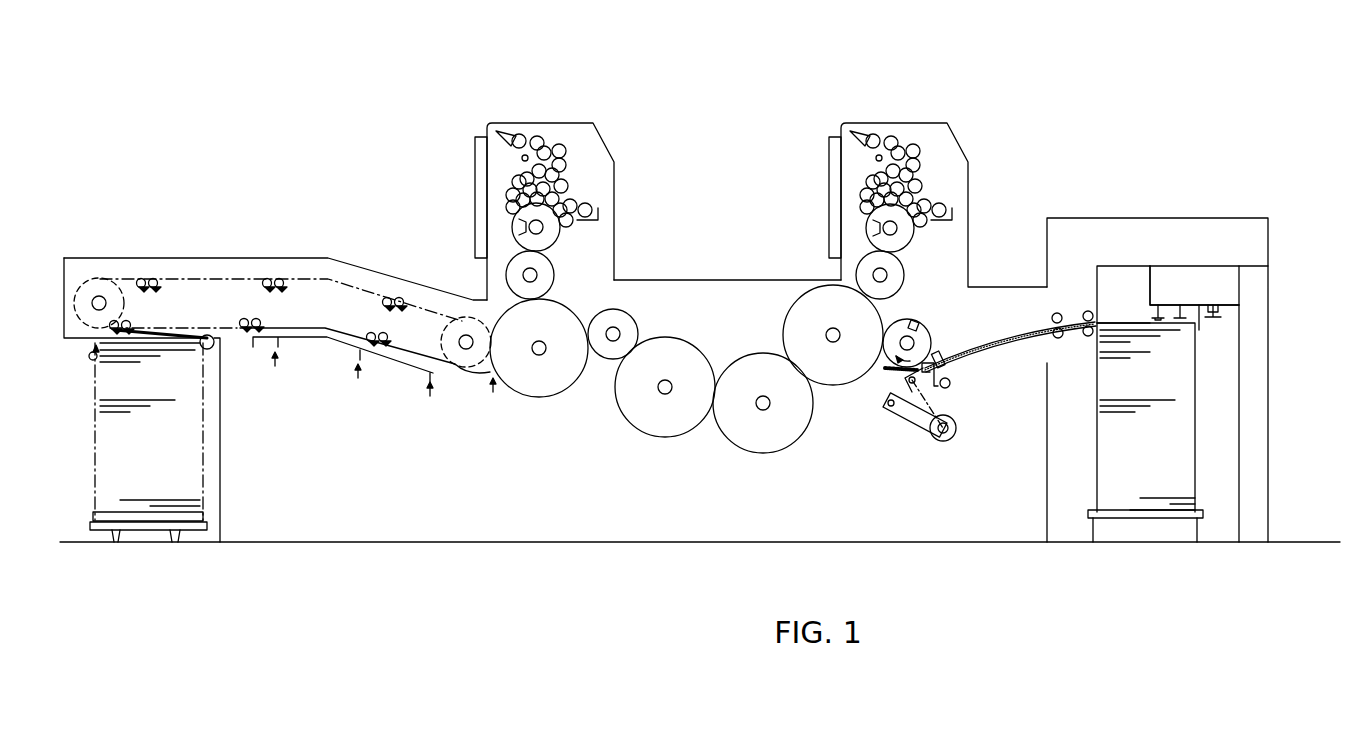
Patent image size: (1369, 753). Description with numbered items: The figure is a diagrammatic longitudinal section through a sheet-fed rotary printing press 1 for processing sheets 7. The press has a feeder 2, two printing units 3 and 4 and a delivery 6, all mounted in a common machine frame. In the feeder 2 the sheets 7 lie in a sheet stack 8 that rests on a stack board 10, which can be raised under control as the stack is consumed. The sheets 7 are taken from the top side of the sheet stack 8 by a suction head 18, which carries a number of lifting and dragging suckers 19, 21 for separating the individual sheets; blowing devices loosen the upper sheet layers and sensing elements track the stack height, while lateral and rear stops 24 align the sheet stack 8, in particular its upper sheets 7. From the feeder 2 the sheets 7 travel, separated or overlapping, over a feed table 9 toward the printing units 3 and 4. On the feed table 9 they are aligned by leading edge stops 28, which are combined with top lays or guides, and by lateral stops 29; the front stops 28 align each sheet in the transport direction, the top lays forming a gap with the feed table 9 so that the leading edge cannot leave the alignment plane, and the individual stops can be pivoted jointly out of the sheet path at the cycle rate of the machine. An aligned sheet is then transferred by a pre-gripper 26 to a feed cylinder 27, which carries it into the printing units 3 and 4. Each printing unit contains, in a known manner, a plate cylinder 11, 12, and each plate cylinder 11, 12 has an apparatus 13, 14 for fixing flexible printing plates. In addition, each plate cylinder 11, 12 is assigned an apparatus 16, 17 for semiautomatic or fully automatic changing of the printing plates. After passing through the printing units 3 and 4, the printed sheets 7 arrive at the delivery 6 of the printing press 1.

The printing press 1 is at (985, 147).
The feeder 2 is at (1198, 222).
The printing unit 3 is at (933, 137).
The printing unit 4 is at (570, 137).
The delivery 6 is at (253, 238).
The sheets 7 is at (1148, 322).
The sheet stack 8 is at (1159, 463).
The feed table 9 is at (1008, 340).
The stack board 10 is at (1210, 514).
The plate cylinder 11 is at (903, 232).
The plate cylinder 12 is at (545, 233).
The apparatus for fixing flexible printing plates 13 is at (870, 227).
The apparatus for fixing flexible printing plates 14 is at (516, 227).
The apparatus for printing plate changing 16 is at (833, 165).
The apparatus for printing plate changing 17 is at (480, 165).
The suction head 18 is at (1198, 282).
The lifting sucker 19 is at (1178, 305).
The dragging sucker 21 is at (1160, 307).
The lateral and rear stops 24 is at (1200, 333).
The pre-gripper 26 is at (912, 420).
The feed cylinder 27 is at (918, 322).
The leading edge stops 28 is at (940, 387).
The lateral stops 29 is at (945, 356).